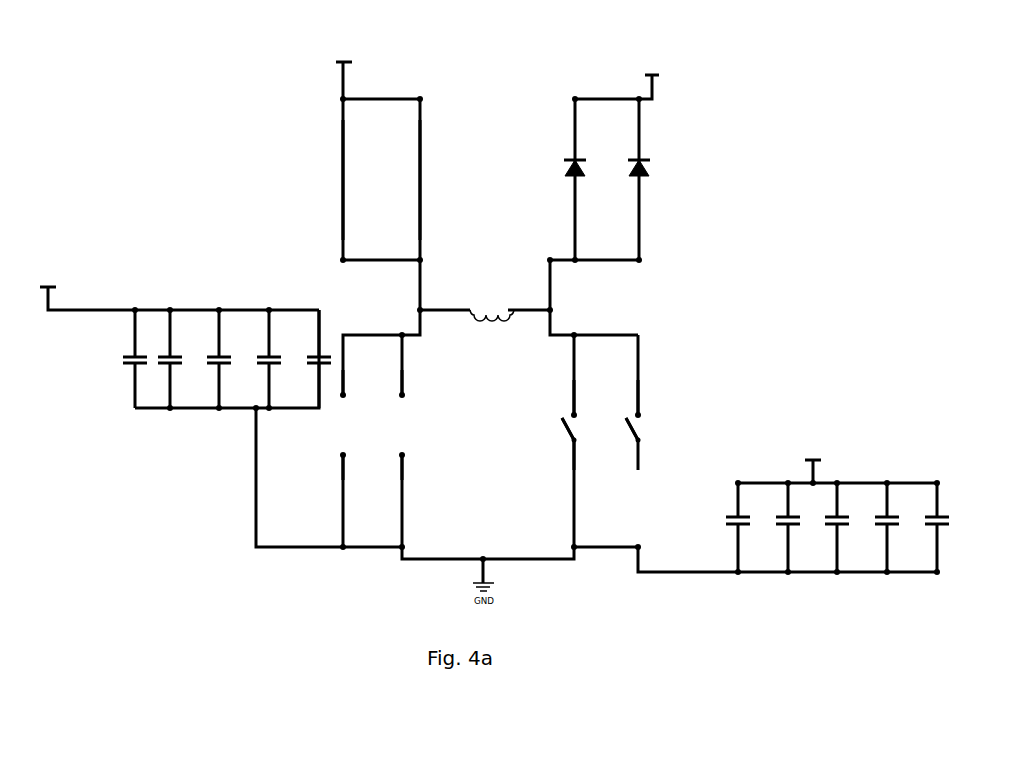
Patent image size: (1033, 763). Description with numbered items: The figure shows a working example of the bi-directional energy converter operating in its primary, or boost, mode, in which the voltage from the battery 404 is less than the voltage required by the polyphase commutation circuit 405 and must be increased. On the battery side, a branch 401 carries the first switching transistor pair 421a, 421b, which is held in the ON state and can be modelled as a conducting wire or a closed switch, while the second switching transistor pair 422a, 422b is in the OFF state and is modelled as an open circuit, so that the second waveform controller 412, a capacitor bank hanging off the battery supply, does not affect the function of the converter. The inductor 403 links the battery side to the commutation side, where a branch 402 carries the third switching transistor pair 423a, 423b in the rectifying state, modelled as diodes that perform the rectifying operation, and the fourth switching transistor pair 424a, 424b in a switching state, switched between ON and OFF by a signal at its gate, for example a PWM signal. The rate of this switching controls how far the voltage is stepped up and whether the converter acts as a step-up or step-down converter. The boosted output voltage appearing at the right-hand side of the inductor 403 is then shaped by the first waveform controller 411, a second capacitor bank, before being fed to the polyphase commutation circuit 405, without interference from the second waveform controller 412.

The first half-bridge branch 401 is at (342, 98).
The second half-bridge branch 402 is at (653, 97).
The inductor 403 is at (494, 306).
The battery 404 is at (365, 60).
The polyphase commutation circuit 405 is at (587, 70).
The first waveform controller 411 is at (845, 483).
The second waveform controller 412 is at (157, 410).
The first switching transistor 421a is at (349, 178).
The first switching transistor 421b is at (417, 178).
The second switching transistor 422a is at (348, 458).
The second switching transistor 422b is at (400, 457).
The third switching transistor 423a is at (575, 152).
The third switching transistor 423b is at (628, 158).
The fourth switching transistor 424a is at (582, 397).
The fourth switching transistor 424b is at (633, 396).